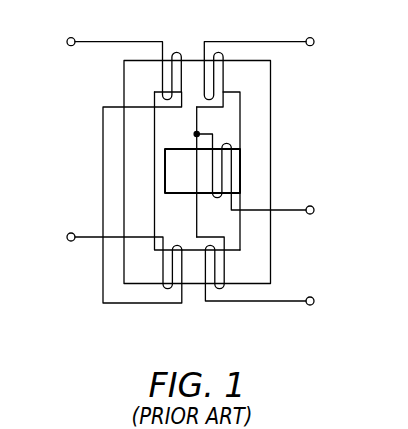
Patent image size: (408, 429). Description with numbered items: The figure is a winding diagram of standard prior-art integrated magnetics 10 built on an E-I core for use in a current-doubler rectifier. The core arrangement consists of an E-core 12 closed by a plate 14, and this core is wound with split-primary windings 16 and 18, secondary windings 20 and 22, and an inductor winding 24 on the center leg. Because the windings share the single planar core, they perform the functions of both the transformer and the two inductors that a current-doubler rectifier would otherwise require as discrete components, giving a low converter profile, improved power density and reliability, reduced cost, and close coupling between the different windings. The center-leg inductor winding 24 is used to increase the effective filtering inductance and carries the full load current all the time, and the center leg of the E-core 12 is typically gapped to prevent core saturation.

The integrated magnetics 10 is at (304, 102).
The E-core 12 is at (270, 241).
The plate 14 is at (135, 167).
The split-primary winding 16 is at (162, 76).
The split-primary winding 18 is at (158, 268).
The secondary winding 20 is at (216, 76).
The secondary winding 22 is at (228, 265).
The inductor winding 24 is at (212, 173).